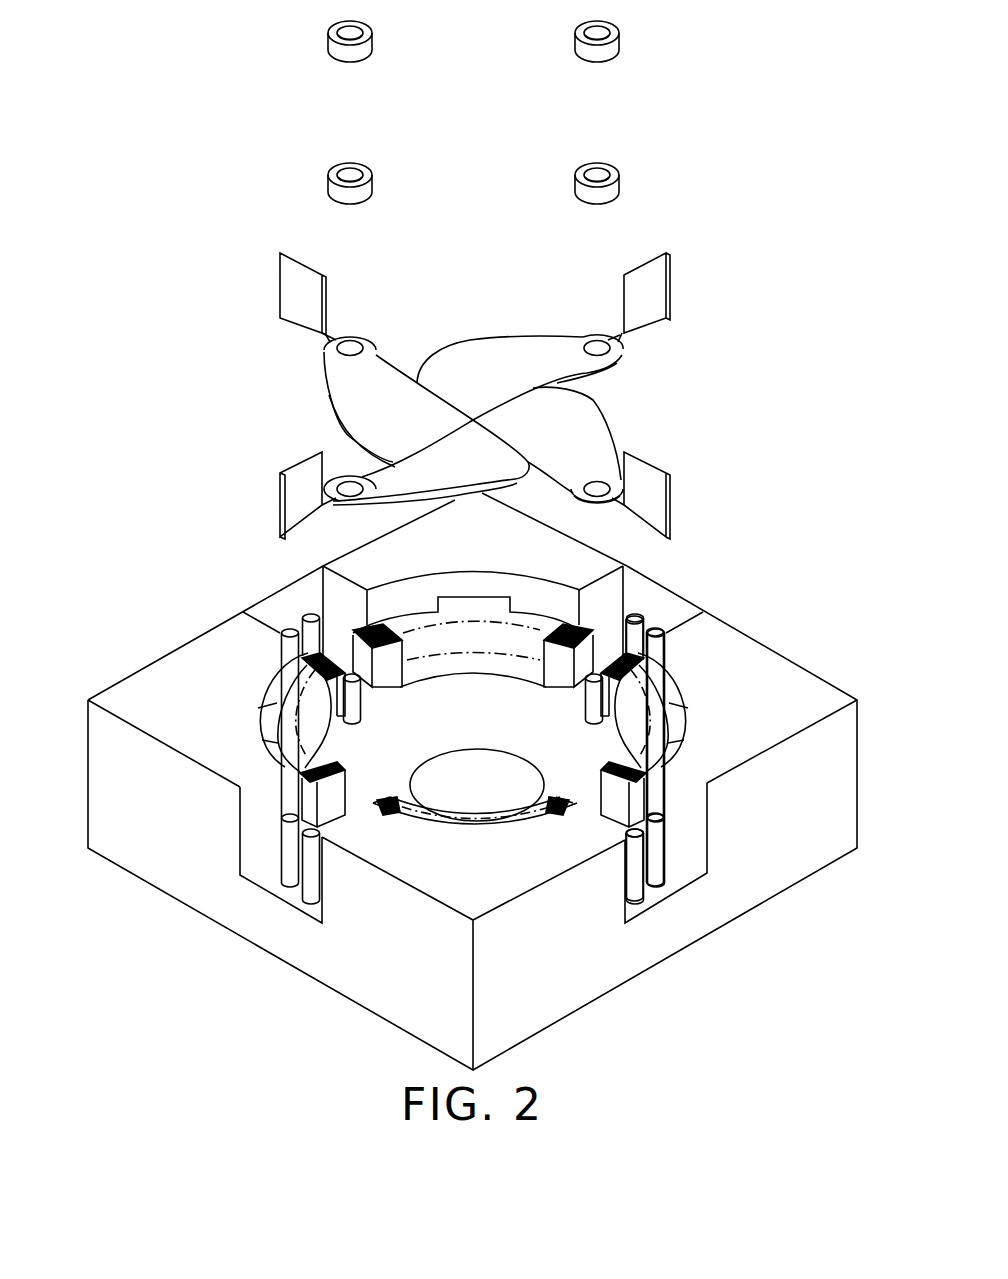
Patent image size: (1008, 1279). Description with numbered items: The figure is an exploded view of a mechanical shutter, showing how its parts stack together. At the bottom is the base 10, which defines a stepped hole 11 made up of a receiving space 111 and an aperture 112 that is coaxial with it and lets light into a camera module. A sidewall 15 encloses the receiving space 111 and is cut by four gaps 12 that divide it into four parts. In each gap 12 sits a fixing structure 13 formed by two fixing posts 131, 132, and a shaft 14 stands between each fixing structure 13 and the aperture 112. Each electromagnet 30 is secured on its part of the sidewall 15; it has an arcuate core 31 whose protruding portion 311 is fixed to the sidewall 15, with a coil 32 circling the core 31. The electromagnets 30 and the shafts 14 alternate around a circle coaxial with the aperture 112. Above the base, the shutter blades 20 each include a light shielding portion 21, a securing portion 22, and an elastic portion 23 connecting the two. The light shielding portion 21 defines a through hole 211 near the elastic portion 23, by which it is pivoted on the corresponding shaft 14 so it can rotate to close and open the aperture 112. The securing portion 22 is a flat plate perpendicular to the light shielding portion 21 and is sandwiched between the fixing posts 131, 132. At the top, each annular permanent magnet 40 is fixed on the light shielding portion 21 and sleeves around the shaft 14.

The base 10 is at (765, 697).
The stepped hole 11 is at (577, 611).
The receiving space 111 is at (590, 552).
The aperture 112 is at (675, 690).
The gap 12 is at (267, 873).
The fixing structure 13 is at (712, 834).
The fixing post 131 is at (638, 880).
The fixing post 132 is at (668, 862).
The shaft 14 is at (350, 677).
The sidewall 15 is at (400, 598).
The shutter blade 20 is at (513, 393).
The light shielding portion 21 is at (469, 378).
The through hole 211 is at (598, 330).
The securing portion 22 is at (660, 283).
The elastic portion 23 is at (626, 340).
The electromagnet 30 is at (379, 728).
The core 31 is at (189, 695).
The protruding portion 311 is at (290, 697).
The coil 32 is at (293, 690).
The permanent magnet 40 is at (614, 178).